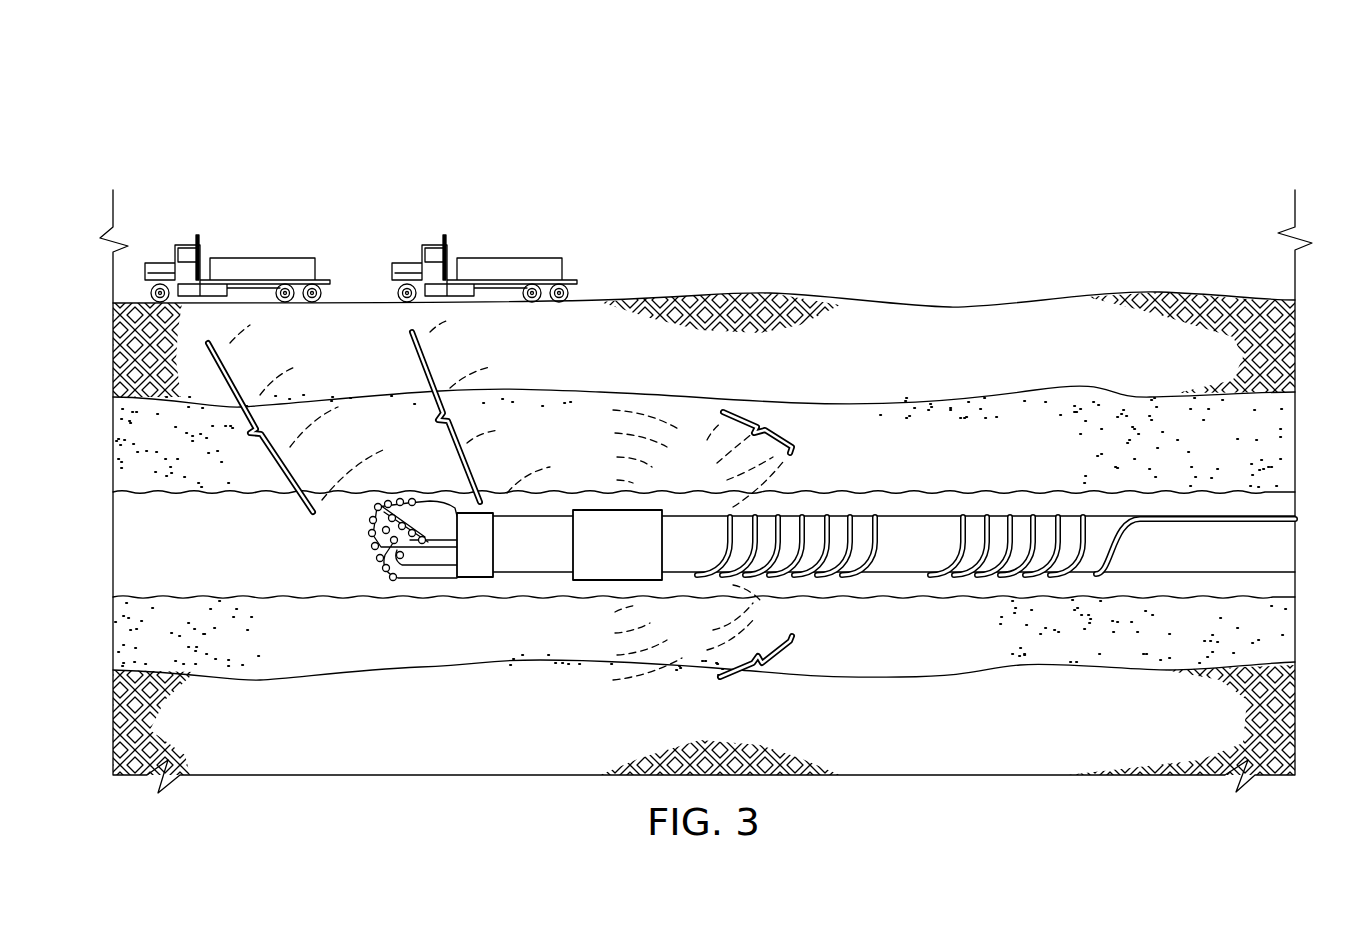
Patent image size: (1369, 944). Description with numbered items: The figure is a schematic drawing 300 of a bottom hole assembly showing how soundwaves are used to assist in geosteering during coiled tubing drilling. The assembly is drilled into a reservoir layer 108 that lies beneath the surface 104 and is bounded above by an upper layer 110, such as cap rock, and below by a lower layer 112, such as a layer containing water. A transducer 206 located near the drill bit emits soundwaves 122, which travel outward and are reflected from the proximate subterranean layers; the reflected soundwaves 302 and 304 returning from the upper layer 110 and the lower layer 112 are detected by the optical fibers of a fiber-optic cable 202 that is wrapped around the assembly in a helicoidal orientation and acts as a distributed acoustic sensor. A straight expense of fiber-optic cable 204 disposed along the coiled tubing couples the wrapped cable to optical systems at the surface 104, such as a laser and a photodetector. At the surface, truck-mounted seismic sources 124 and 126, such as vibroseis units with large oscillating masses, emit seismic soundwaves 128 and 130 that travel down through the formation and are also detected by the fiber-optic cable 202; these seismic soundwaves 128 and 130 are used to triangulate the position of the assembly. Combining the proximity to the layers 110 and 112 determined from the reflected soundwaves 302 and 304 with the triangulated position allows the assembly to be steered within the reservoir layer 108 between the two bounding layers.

The schematic drawing 300 is at (368, 122).
The surface 104 is at (937, 305).
The reservoir layer 108 is at (93, 493).
The upper layer 110 is at (1266, 498).
The lower layer 112 is at (1266, 598).
The soundwaves 122 is at (609, 407).
The seismic source 124 is at (263, 257).
The seismic source 126 is at (510, 257).
The seismic soundwaves 128 is at (377, 418).
The seismic soundwaves 130 is at (446, 411).
The fiber-optic cable 202 is at (826, 578).
The straight expense of fiber-optic cable 204 is at (1203, 514).
The transducer 206 is at (638, 562).
The reflected soundwaves 302 is at (749, 447).
The reflected soundwaves 304 is at (752, 644).